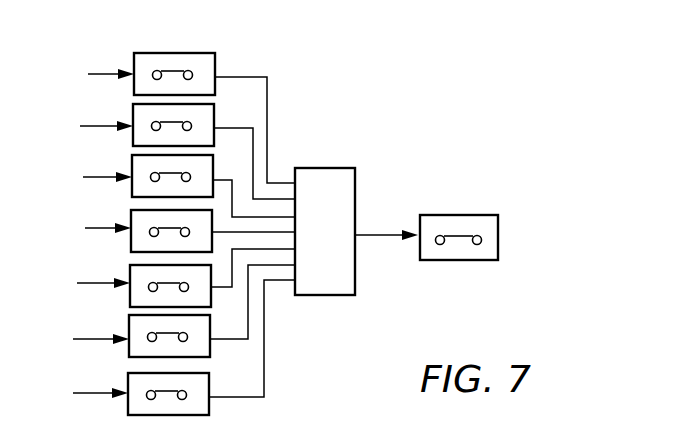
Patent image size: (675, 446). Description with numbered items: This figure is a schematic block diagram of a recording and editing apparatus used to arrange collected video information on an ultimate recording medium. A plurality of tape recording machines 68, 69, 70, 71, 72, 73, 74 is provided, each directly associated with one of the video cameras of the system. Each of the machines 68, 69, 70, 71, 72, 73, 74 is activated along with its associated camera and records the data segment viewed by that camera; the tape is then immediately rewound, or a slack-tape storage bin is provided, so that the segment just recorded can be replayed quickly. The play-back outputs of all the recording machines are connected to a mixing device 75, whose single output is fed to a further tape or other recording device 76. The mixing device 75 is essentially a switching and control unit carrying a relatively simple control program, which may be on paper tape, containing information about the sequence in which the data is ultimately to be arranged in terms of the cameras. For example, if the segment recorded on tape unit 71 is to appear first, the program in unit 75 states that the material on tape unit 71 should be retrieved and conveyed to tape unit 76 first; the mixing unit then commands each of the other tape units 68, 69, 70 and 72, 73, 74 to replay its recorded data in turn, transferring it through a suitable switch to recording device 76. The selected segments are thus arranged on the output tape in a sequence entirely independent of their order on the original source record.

The tape recording machine 68 is at (134, 58).
The tape recording machine 69 is at (133, 110).
The tape recording machine 70 is at (132, 160).
The tape recording machine 71 is at (131, 217).
The tape recording machine 72 is at (130, 270).
The tape recording machine 73 is at (129, 323).
The tape recording machine 74 is at (128, 378).
The mixing device 75 is at (318, 168).
The recording device 76 is at (462, 215).